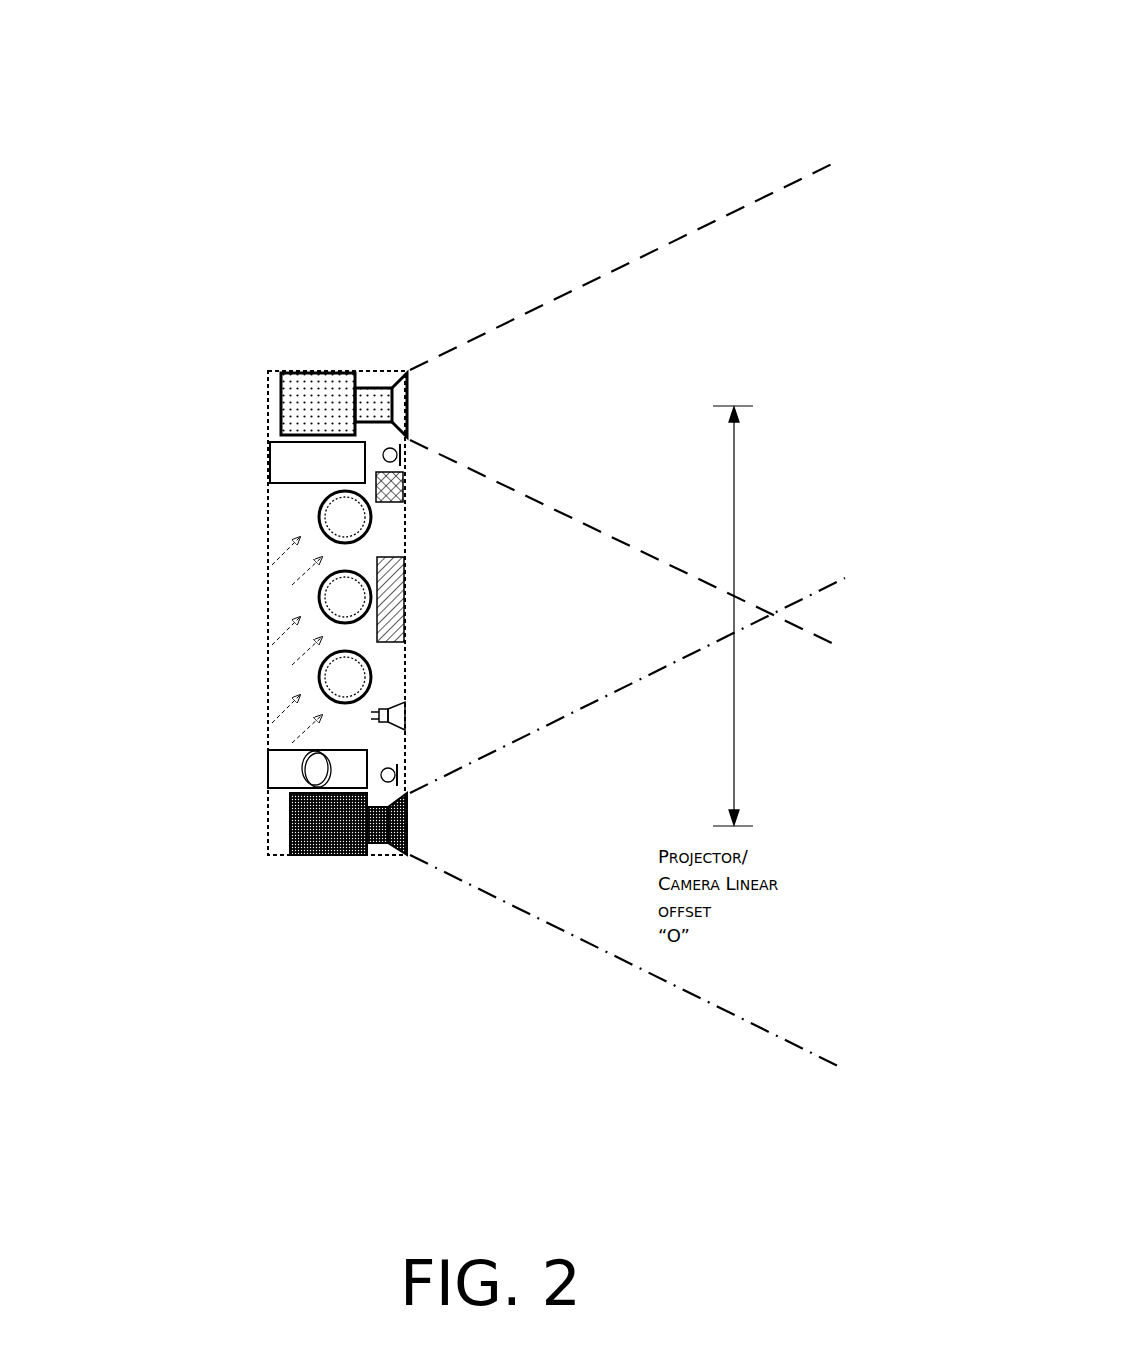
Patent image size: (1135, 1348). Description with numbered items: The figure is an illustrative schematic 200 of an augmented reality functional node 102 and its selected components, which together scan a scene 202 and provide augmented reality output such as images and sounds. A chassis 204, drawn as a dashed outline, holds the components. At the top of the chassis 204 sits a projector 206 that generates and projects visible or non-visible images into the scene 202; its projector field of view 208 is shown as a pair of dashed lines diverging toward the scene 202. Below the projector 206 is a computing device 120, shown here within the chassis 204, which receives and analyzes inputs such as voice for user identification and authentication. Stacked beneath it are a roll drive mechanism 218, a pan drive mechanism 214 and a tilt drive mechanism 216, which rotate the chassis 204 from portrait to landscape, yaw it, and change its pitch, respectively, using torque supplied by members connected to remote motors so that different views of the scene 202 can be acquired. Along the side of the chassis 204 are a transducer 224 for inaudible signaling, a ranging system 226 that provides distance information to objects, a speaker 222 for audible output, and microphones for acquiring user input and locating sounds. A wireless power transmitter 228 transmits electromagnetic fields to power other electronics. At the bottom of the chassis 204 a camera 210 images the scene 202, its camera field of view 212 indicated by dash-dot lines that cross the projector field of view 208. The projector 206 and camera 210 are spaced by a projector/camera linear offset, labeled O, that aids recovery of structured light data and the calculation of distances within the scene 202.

The illustrative schematic 200 is at (803, 18).
The augmented reality functional node 102 is at (278, 300).
The chassis 204 is at (337, 370).
The projector 206 is at (318, 405).
The projector field of view 208 is at (632, 267).
The computing device 120 is at (315, 465).
The transducer 224 is at (405, 480).
The roll drive mechanism 218 is at (318, 508).
The pan drive mechanism 214 is at (318, 597).
The tilt drive mechanism 216 is at (318, 678).
The ranging system 226 is at (405, 593).
The speaker 222 is at (407, 715).
The wireless power transmitter 228 is at (303, 772).
The camera 210 is at (290, 852).
The camera field of view 212 is at (578, 945).
The scene 202 is at (808, 616).